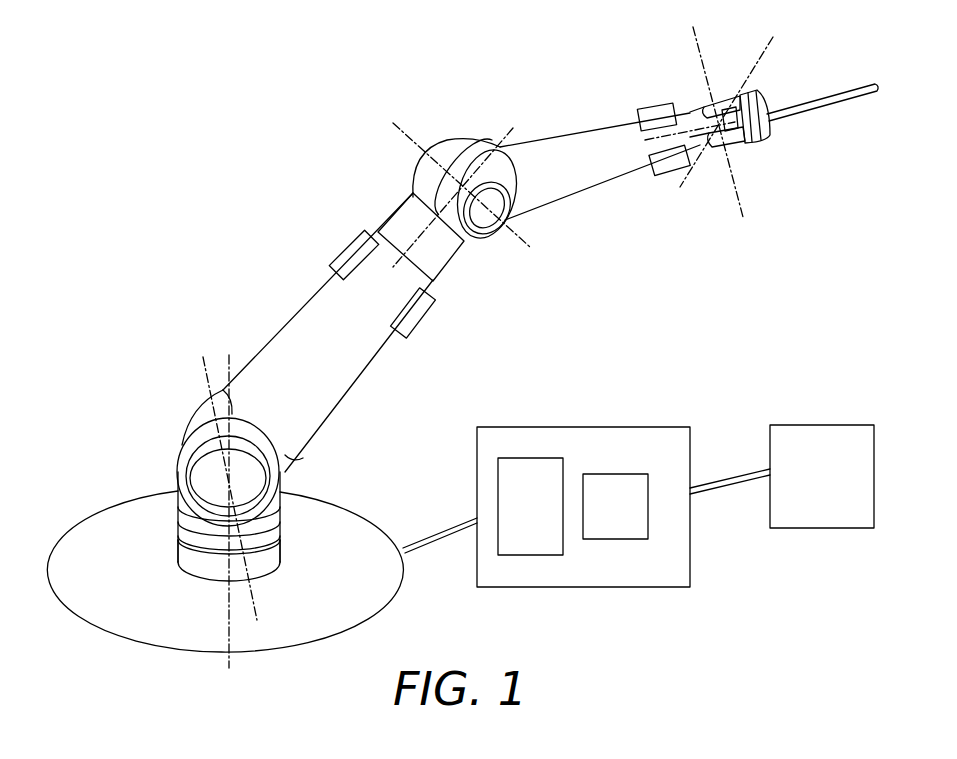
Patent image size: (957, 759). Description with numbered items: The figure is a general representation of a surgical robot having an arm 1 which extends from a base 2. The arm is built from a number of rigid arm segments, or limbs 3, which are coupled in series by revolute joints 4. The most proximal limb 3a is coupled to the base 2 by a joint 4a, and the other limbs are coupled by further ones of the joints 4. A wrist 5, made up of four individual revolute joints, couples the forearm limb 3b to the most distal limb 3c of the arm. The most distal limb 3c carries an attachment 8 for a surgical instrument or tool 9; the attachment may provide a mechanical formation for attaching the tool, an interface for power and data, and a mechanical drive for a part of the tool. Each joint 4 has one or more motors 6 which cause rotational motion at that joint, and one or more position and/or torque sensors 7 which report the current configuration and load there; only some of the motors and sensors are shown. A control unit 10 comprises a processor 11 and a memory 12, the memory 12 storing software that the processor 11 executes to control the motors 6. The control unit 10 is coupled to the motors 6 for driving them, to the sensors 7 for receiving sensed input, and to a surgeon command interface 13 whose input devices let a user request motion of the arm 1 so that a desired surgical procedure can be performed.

The arm 1 is at (341, 172).
The base 2 is at (371, 530).
The limbs 3 is at (307, 316).
The most proximal limb 3a is at (177, 532).
The forearm limb 3b is at (606, 128).
The most distal limb 3c is at (763, 138).
The revolute joints 4 is at (453, 147).
The joint 4a is at (280, 530).
The wrist 5 is at (740, 44).
The motors 6 is at (342, 256).
The position and/or torque sensors 7 is at (417, 320).
The attachment 8 is at (772, 97).
The surgical instrument or tool 9 is at (843, 88).
The control unit 10 is at (667, 427).
The processor 11 is at (543, 555).
The memory 12 is at (628, 539).
The surgeon command interface 13 is at (848, 425).